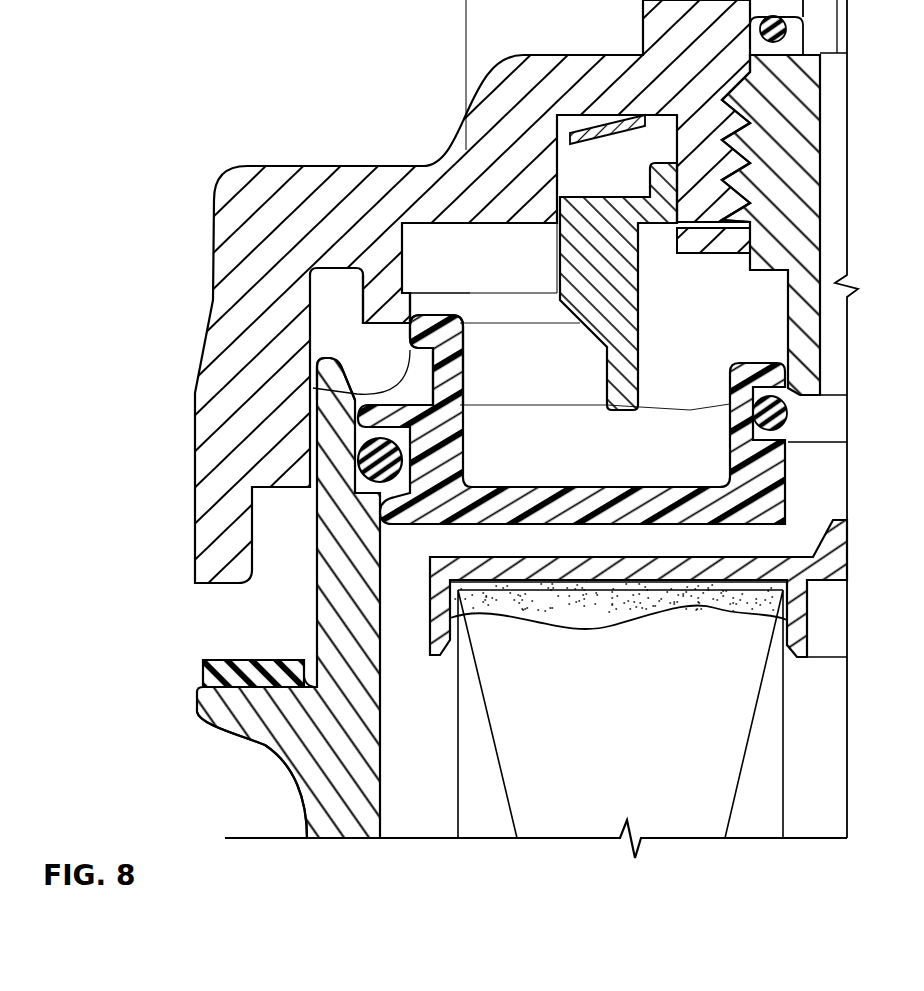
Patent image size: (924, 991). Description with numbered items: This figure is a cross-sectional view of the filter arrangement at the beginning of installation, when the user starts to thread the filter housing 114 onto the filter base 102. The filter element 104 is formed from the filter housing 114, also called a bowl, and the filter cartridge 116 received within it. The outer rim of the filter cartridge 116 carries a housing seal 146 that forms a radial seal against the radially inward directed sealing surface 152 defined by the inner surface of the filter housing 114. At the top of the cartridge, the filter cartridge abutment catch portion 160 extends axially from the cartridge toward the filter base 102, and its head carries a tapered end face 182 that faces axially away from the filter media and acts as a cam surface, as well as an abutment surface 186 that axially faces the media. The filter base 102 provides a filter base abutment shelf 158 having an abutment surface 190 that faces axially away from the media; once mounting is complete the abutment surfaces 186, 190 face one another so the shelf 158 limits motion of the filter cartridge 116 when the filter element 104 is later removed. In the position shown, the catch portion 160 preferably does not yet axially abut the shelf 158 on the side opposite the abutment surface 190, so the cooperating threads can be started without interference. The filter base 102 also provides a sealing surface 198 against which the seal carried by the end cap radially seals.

The filter base 102 is at (205, 151).
The filter element 104 is at (176, 652).
The filter housing 114 is at (290, 740).
The filter cartridge 116 is at (440, 793).
The housing seal 146 is at (383, 446).
The sealing surface 152 is at (397, 513).
The filter base abutment shelf 158 is at (412, 306).
The filter cartridge abutment catch portion 160 is at (452, 314).
The tapered end face 182 is at (409, 339).
The abutment surface 186 is at (313, 388).
The abutment surface 190 is at (428, 300).
The sealing surface 198 is at (787, 310).